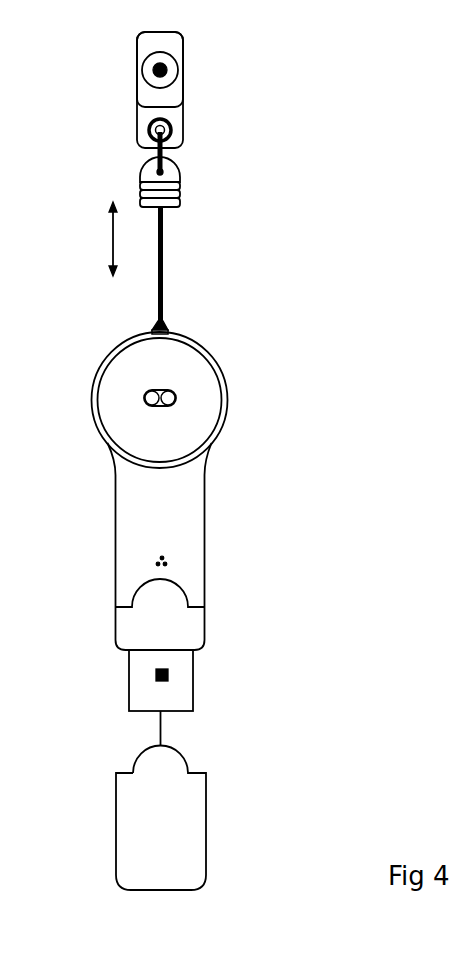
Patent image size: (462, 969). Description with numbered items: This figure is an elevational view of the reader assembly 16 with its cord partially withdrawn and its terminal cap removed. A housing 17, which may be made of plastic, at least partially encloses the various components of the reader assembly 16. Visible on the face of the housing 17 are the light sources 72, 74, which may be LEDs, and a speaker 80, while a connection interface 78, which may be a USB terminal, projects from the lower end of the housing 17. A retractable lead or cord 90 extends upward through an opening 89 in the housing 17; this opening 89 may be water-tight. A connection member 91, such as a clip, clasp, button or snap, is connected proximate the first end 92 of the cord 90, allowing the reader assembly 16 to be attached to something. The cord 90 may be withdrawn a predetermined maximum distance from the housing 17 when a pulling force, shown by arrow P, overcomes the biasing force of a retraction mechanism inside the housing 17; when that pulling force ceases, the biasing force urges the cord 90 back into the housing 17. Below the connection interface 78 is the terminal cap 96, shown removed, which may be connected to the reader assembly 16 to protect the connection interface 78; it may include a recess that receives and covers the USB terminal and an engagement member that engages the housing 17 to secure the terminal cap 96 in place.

The reader assembly 16 is at (366, 196).
The housing 17 is at (190, 484).
The light source 72 is at (171, 398).
The light source 74 is at (150, 406).
The connection interface 78 is at (195, 675).
The speaker 80 is at (166, 559).
The opening 89 is at (169, 325).
The cord 90 is at (164, 263).
The connection member 91 is at (185, 87).
The first end 92 is at (164, 218).
The terminal cap 96 is at (193, 830).
The pulling force P is at (115, 237).